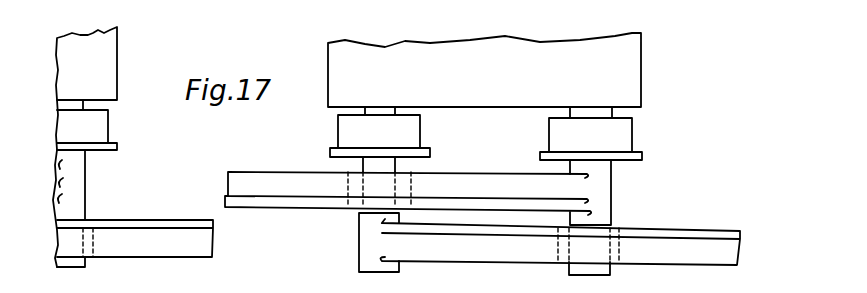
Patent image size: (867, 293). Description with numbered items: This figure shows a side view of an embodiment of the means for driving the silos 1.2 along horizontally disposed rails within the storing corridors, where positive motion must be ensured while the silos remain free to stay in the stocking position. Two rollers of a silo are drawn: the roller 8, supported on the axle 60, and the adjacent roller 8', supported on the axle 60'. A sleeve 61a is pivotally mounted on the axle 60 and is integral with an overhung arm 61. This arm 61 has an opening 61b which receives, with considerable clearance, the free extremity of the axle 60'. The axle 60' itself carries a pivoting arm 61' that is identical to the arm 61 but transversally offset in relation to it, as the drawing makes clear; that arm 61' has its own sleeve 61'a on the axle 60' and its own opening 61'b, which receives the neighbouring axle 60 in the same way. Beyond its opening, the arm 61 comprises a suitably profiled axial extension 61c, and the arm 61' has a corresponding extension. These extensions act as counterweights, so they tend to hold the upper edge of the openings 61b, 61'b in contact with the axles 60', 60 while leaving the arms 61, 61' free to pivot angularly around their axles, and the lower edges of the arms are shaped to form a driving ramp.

The silos 1.2 is at (105, 47).
The roller 8 is at (254, 128).
The adjacent roller 8' is at (610, 139).
The axle 60 is at (345, 143).
The axle 60' is at (591, 95).
The overhung arm 61 is at (560, 254).
The sleeve 61a is at (363, 245).
The opening 61b is at (621, 250).
The axial extension 61c is at (140, 240).
The pivoting arm 61' is at (408, 180).
The sleeve 61'a is at (619, 192).
The opening 61'b is at (310, 164).